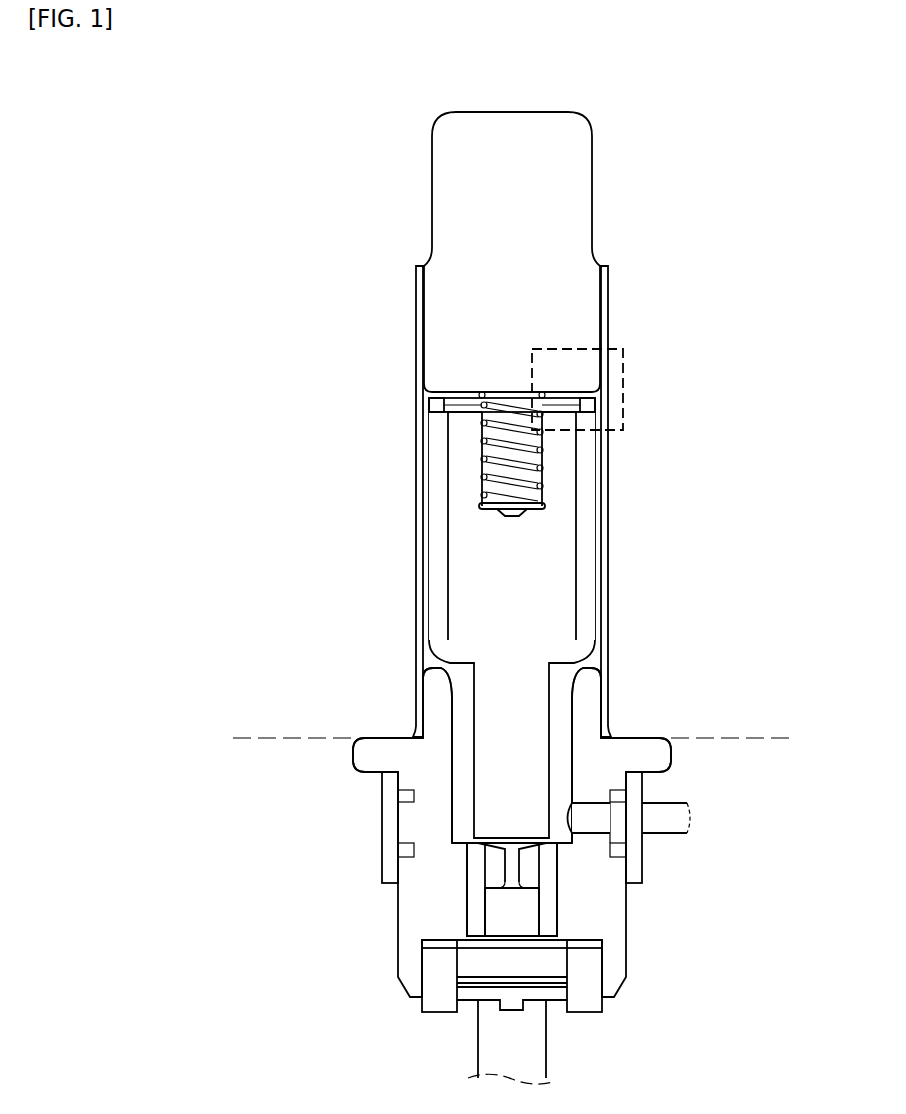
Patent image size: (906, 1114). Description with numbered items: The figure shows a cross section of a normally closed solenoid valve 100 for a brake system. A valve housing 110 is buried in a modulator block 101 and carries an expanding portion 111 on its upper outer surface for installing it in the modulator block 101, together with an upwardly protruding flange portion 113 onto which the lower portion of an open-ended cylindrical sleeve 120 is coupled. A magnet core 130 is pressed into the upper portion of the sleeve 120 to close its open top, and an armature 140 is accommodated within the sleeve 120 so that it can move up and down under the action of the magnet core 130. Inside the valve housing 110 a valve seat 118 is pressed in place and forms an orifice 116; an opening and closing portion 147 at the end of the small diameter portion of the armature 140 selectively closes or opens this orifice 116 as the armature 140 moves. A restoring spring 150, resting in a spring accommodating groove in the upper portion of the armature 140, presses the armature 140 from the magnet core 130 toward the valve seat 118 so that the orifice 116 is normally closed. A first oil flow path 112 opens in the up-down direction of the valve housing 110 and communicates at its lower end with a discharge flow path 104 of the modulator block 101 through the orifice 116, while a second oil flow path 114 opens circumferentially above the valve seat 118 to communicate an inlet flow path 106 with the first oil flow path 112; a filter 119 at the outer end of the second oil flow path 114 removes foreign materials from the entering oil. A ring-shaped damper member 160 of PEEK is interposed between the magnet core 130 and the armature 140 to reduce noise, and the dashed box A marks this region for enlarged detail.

The solenoid valve 100 is at (353, 77).
The modulator block 101 is at (757, 752).
The discharge flow path 104 is at (527, 1036).
The inlet flow path 106 is at (657, 826).
The valve housing 110 is at (618, 906).
The expanding portion 111 is at (665, 757).
The first oil flow path 112 is at (562, 750).
The flange portion 113 is at (433, 708).
The second oil flow path 114 is at (590, 816).
The orifice 116 is at (500, 880).
The valve seat 118 is at (560, 931).
The filter 119 is at (643, 786).
The sleeve 120 is at (606, 654).
The magnet core 130 is at (585, 196).
The armature 140 is at (565, 521).
The opening and closing portion 147 is at (473, 849).
The restoring spring 150 is at (540, 463).
The damper member 160 is at (578, 406).
The detail region A is at (623, 357).